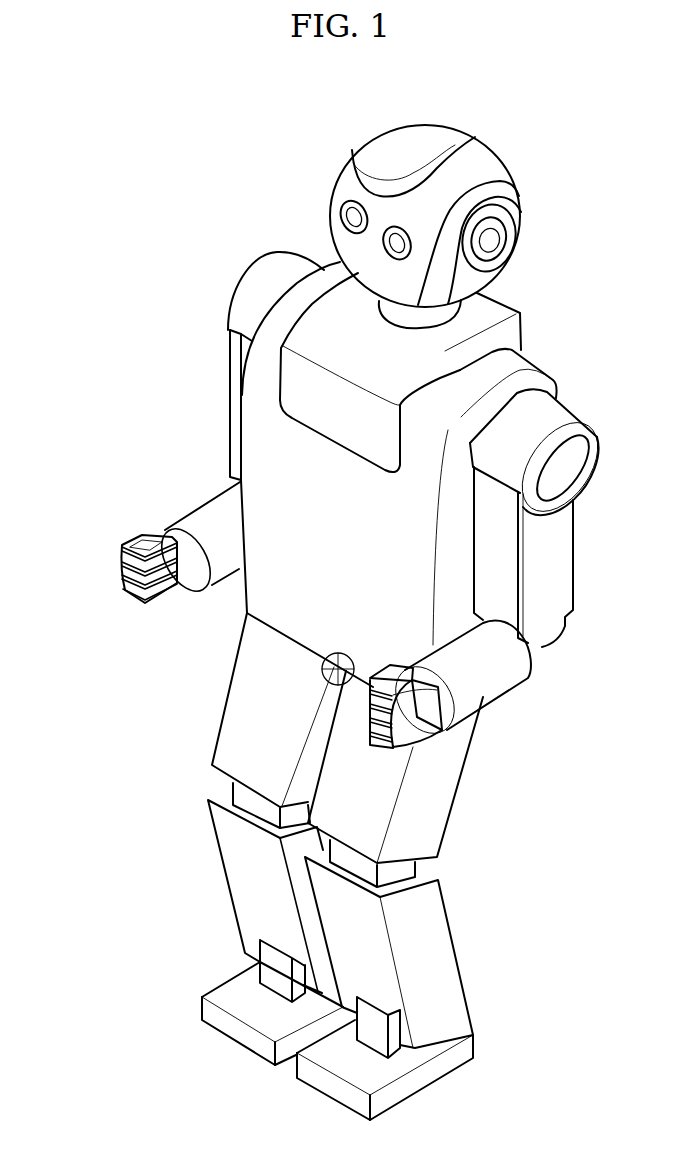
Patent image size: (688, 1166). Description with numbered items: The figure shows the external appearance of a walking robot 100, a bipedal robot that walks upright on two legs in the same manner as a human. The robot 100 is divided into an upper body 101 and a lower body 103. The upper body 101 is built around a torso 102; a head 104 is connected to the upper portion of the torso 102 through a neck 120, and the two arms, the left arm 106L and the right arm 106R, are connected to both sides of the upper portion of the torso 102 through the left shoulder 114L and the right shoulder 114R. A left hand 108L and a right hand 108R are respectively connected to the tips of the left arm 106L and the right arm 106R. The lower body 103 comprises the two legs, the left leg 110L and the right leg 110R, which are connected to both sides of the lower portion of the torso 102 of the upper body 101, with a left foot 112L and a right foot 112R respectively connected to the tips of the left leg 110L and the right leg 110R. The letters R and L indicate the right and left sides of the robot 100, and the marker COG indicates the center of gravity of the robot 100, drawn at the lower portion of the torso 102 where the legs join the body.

The robot 100 is at (336, 89).
The upper body 101 is at (128, 346).
The torso 102 is at (262, 457).
The lower body 103 is at (170, 778).
The head 104 is at (346, 187).
The right arm 106R is at (187, 522).
The left arm 106L is at (553, 630).
The right hand 108R is at (122, 566).
The left hand 108L is at (415, 732).
The right leg 110R is at (237, 878).
The left leg 110L is at (443, 951).
The right foot 112R is at (210, 1017).
The left foot 112L is at (420, 1080).
The right shoulder 114R is at (253, 283).
The left shoulder 114L is at (557, 418).
The neck 120 is at (447, 313).
The center of gravity COG is at (321, 664).